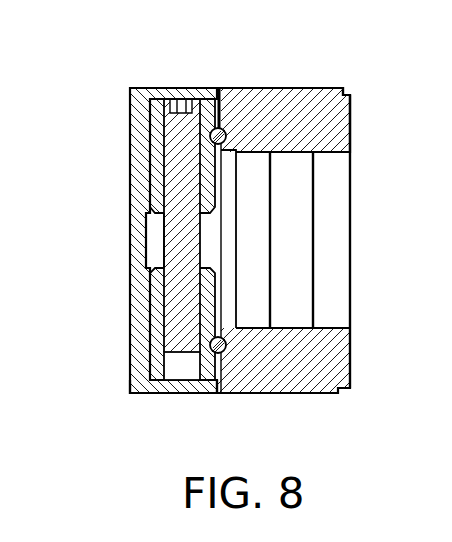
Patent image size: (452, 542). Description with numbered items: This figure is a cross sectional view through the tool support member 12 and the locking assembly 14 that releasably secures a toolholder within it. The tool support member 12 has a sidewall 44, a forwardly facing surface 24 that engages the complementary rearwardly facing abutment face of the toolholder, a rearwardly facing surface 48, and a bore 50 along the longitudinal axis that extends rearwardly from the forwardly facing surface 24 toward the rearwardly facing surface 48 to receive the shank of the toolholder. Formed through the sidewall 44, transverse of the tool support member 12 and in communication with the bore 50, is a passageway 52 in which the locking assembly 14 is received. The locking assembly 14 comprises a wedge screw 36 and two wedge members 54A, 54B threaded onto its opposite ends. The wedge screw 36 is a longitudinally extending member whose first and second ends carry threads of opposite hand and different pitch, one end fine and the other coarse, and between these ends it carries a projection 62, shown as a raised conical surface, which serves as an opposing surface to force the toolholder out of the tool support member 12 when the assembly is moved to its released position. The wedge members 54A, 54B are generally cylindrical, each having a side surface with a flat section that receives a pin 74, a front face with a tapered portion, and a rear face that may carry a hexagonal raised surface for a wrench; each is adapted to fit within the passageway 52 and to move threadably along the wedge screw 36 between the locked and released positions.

The tool support member 12 is at (352, 420).
The locking assembly 14 is at (163, 65).
The forwardly facing surface 24 is at (352, 123).
The wedge screw 36 is at (163, 235).
The sidewall 44 is at (291, 88).
The rearwardly facing surface 48 is at (133, 350).
The bore 50 is at (340, 300).
The passageway 52 is at (212, 88).
The wedge member 54A is at (146, 135).
The wedge member 54B is at (148, 384).
The projection 62 is at (162, 269).
The pin 74 is at (222, 353).